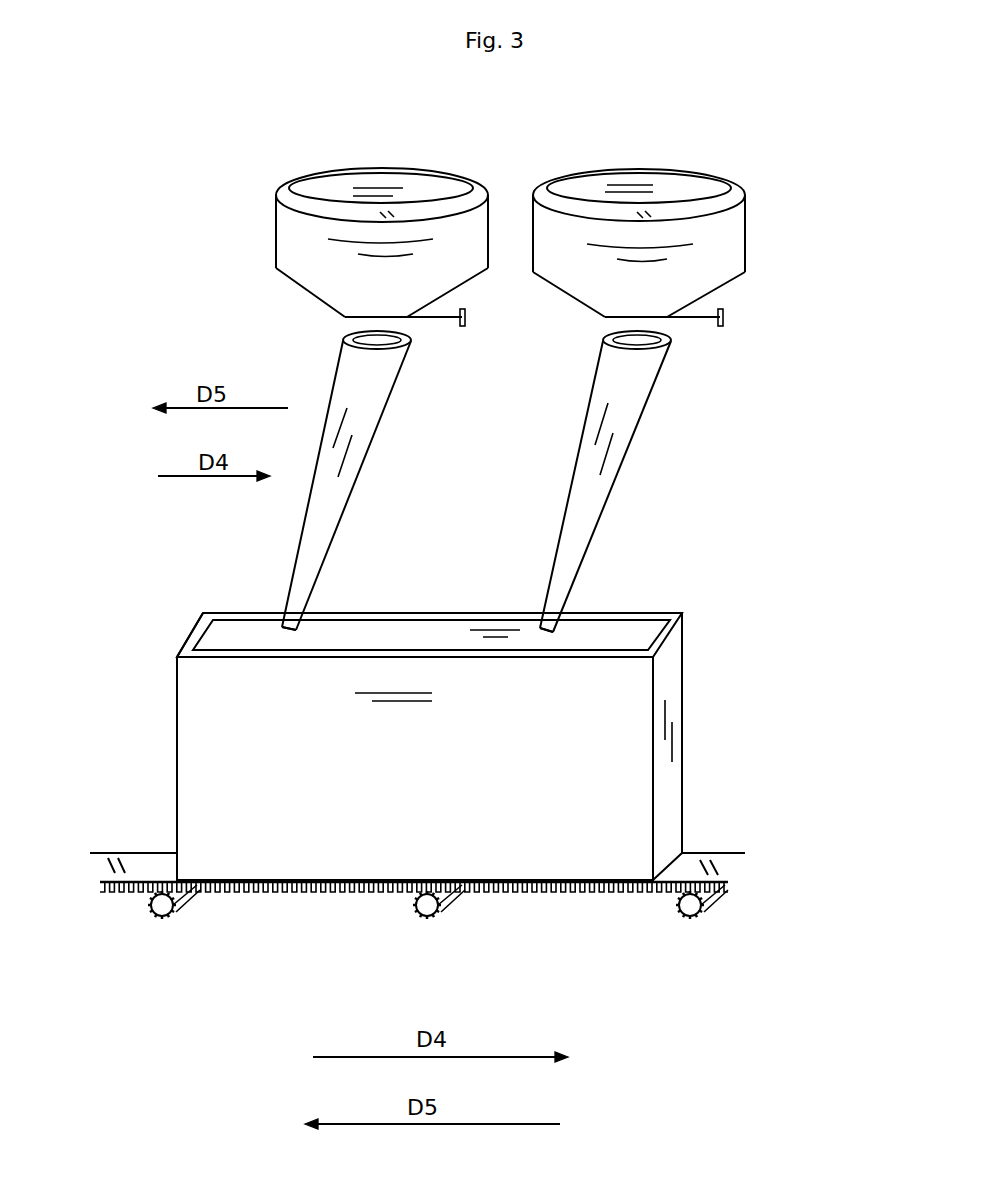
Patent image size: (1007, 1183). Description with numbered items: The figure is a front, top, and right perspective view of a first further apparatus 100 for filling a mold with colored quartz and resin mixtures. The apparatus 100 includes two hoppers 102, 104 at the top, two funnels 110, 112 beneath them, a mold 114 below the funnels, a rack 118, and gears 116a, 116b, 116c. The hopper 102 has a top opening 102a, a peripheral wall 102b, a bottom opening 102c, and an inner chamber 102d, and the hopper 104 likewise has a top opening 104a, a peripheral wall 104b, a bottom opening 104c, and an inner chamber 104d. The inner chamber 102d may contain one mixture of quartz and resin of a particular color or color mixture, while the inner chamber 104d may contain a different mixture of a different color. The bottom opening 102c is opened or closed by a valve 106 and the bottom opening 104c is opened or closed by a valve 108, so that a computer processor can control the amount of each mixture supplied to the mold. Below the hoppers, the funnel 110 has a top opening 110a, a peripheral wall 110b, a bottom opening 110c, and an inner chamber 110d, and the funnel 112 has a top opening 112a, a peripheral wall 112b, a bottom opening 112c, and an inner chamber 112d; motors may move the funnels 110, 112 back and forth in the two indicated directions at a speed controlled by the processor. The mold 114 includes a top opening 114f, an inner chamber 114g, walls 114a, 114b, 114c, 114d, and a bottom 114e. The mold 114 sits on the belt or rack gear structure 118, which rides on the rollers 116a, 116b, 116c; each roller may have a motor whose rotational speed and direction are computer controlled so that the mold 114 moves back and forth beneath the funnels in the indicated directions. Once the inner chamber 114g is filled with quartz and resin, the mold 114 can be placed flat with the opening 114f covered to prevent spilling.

The first further apparatus 100 is at (690, 147).
The hopper 102 is at (320, 193).
The top opening 102a is at (388, 183).
The peripheral wall 102b is at (296, 257).
The bottom opening 102c is at (373, 316).
The inner chamber 102d is at (418, 196).
The hopper 104 is at (668, 183).
The top opening 104a is at (571, 185).
The peripheral wall 104b is at (720, 241).
The bottom opening 104c is at (666, 316).
The inner chamber 104d is at (594, 184).
The valve 106 is at (466, 325).
The valve 108 is at (724, 318).
The funnel 110 is at (318, 512).
The top opening 110a is at (410, 341).
The peripheral wall 110b is at (362, 407).
The bottom opening 110c is at (290, 630).
The inner chamber 110d is at (368, 340).
The funnel 112 is at (575, 516).
The top opening 112a is at (667, 341).
The peripheral wall 112b is at (620, 415).
The bottom opening 112c is at (552, 632).
The inner chamber 112d is at (612, 340).
The mold 114 is at (202, 754).
The wall 114a is at (215, 808).
The wall 114b is at (668, 685).
The wall 114c is at (622, 612).
The wall 114d is at (190, 633).
The bottom 114e is at (510, 887).
The top opening 114f is at (373, 630).
The inner chamber 114g is at (335, 637).
The gear 116a is at (164, 906).
The gear 116b is at (429, 906).
The gear 116c is at (692, 906).
The rack 118 is at (712, 856).